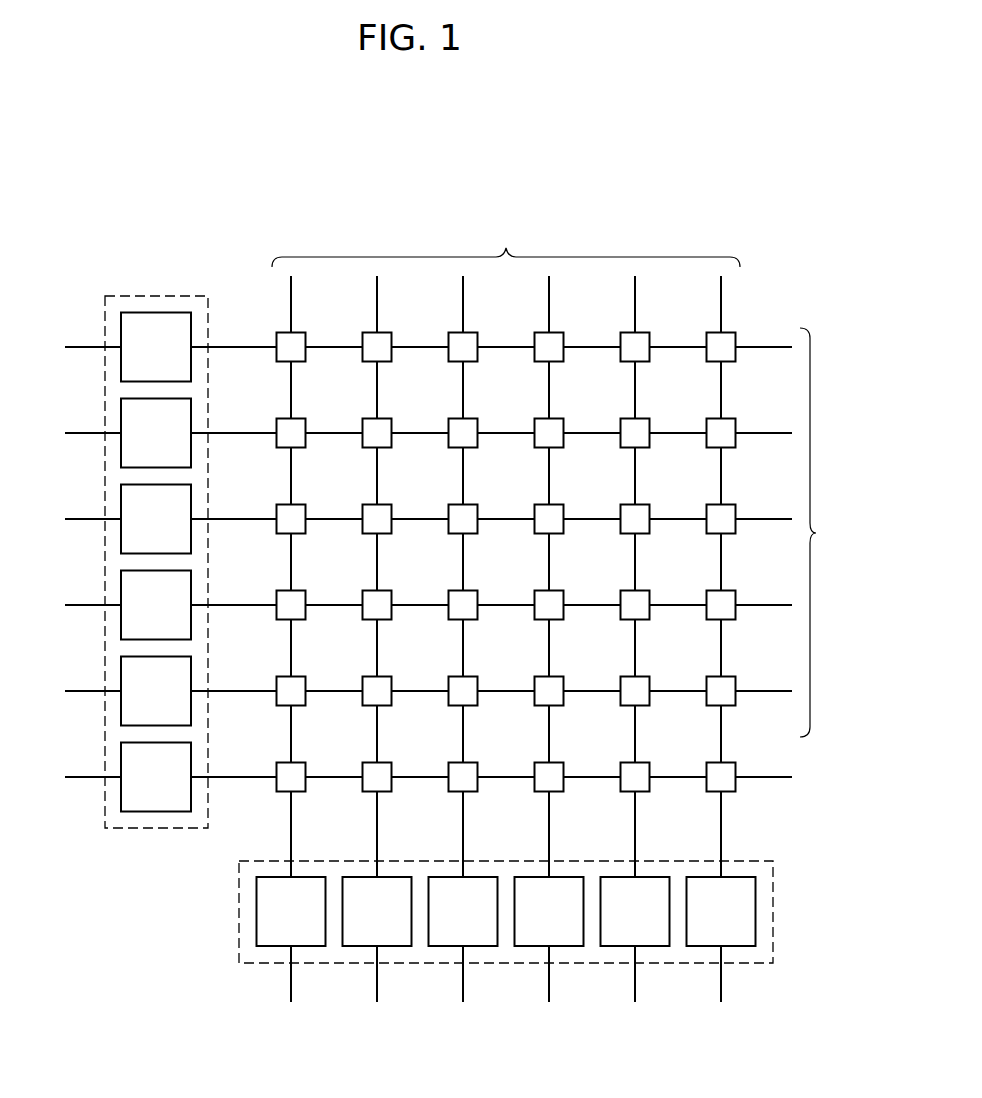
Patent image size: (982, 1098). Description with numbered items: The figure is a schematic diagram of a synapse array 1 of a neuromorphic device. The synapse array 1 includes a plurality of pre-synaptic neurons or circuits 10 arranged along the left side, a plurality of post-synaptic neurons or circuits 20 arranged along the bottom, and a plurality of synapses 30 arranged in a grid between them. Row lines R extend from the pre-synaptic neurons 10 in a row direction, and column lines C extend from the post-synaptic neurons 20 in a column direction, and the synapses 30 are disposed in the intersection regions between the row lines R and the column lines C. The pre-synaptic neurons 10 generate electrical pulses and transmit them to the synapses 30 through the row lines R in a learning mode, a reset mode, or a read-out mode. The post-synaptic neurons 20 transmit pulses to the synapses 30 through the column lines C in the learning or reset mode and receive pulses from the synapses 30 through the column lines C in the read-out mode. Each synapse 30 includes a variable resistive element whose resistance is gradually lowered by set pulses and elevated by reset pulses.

The synapse array 1 is at (684, 214).
The pre-synaptic neurons or circuits 10 is at (139, 841).
The post-synaptic neurons or circuits 20 is at (787, 890).
The synapses 30 is at (728, 342).
The column lines C is at (506, 242).
The row lines R is at (817, 532).